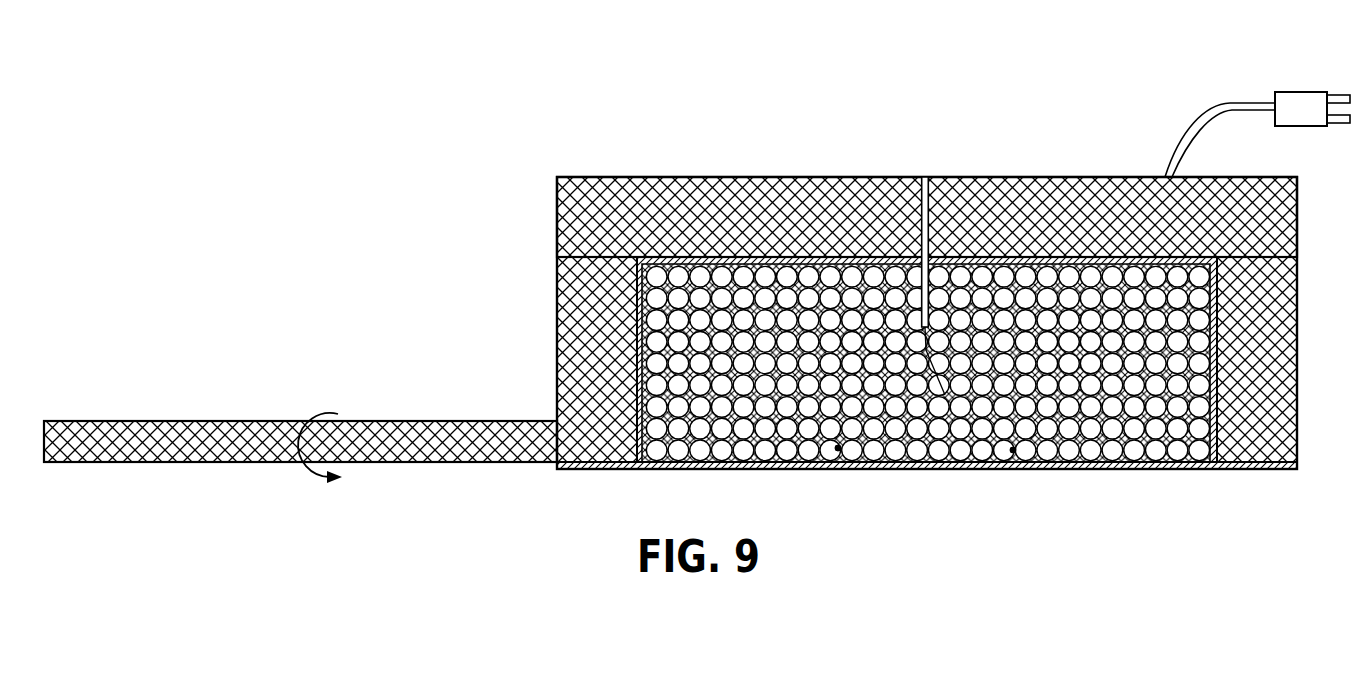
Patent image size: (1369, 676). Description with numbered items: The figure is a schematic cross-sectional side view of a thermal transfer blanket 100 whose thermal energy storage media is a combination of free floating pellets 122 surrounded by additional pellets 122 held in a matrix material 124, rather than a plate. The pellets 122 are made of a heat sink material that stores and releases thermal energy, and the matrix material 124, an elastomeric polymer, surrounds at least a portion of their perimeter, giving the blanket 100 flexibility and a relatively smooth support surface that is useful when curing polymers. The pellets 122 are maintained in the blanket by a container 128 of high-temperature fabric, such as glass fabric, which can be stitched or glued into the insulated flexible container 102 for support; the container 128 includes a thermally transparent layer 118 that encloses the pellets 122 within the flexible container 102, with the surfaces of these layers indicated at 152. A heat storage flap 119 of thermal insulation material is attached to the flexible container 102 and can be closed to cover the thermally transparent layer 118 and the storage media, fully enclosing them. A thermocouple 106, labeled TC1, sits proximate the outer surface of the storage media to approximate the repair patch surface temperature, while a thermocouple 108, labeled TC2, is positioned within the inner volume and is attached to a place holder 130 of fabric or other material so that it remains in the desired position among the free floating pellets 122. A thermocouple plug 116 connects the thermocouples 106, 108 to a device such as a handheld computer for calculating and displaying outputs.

The thermal transfer blanket 100 is at (578, 107).
The flexible container 102 is at (567, 230).
The thermocouple 106 is at (838, 448).
The thermocouple 108 is at (945, 395).
The thermocouple plug 116 is at (1290, 92).
The thermally transparent layer 118 is at (1080, 469).
The heat storage flap 119 is at (212, 462).
The pellets 122 is at (720, 403).
The matrix material 124 is at (895, 445).
The container 128 is at (1062, 263).
The place holder 130 is at (920, 193).
The outer surface 152 is at (700, 177).
The thermocouple 1 TC1 is at (842, 469).
The thermocouple 2 TC2 is at (1013, 470).